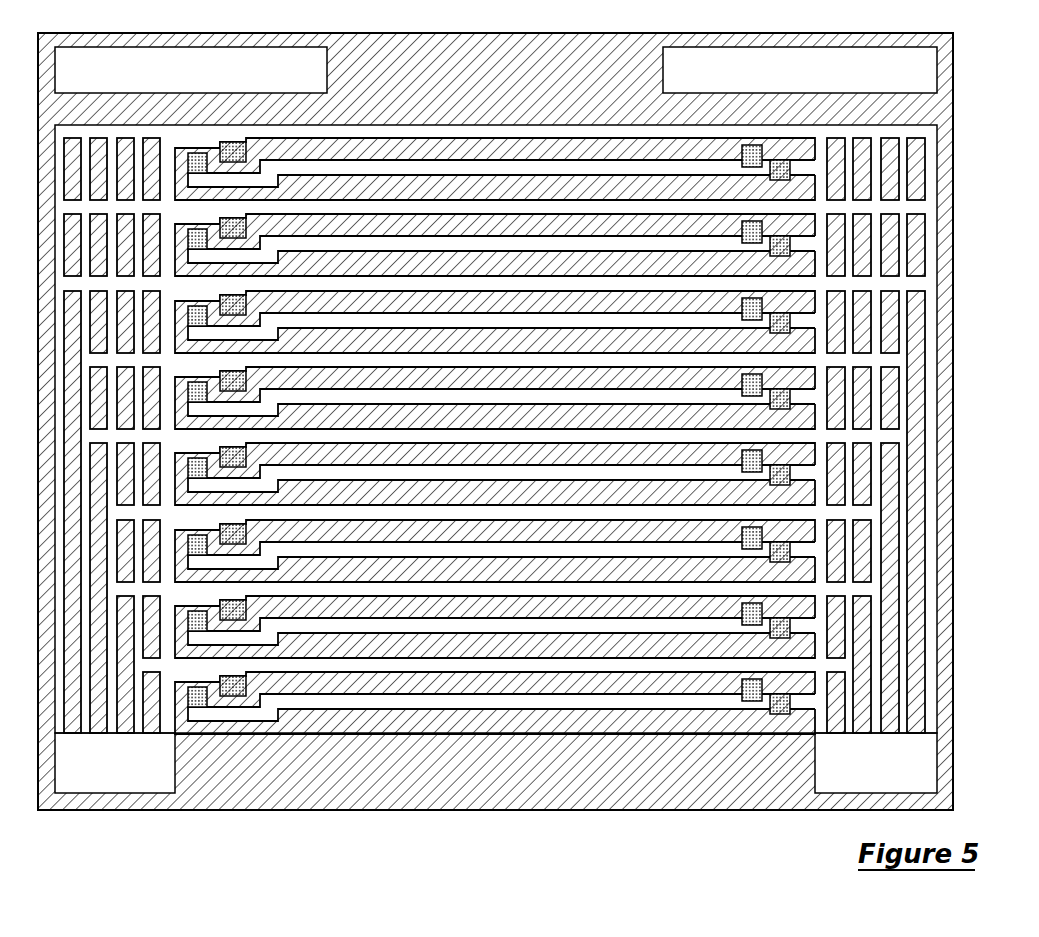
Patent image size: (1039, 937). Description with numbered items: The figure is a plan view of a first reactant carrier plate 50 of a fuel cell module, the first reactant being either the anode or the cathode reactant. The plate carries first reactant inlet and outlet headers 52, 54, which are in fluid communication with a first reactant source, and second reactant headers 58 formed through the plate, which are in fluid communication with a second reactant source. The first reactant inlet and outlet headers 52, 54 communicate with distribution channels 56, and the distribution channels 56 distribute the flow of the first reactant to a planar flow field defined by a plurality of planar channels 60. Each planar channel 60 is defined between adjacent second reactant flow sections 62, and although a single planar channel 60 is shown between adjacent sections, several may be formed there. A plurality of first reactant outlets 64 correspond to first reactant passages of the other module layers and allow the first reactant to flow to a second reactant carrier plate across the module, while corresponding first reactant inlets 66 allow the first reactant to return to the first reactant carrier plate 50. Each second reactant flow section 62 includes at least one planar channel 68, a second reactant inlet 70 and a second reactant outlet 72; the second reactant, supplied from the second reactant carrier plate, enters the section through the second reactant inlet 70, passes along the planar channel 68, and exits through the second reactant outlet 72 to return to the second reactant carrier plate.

The first reactant carrier plate 50 is at (963, 121).
The first reactant inlet header 52 is at (123, 773).
The first reactant outlet header 54 is at (865, 773).
The distribution channels 56 is at (882, 360).
The second reactant headers 58 is at (110, 73).
The planar channels 60 is at (585, 618).
The second reactant flow sections 62 is at (824, 233).
The first reactant outlets 64 is at (247, 222).
The first reactant inlets 66 is at (792, 240).
The planar channel 68 is at (518, 588).
The second reactant inlet 70 is at (193, 237).
The second reactant outlet 72 is at (748, 228).